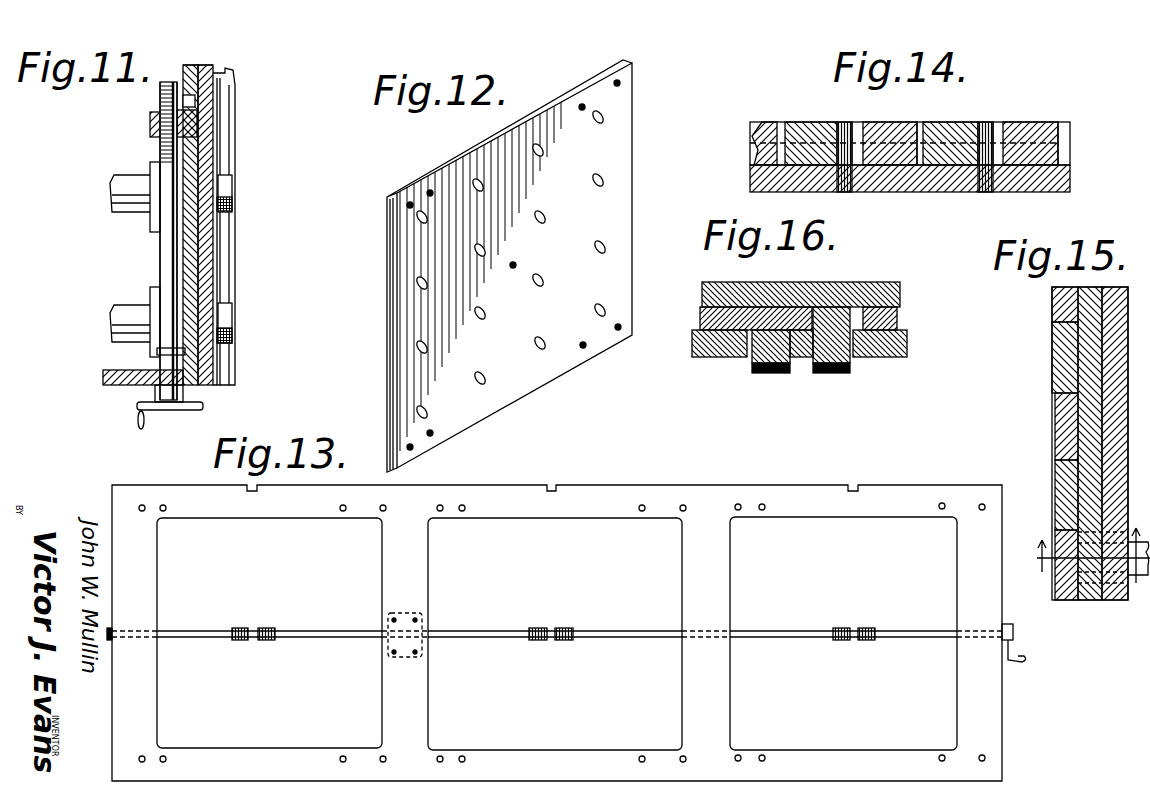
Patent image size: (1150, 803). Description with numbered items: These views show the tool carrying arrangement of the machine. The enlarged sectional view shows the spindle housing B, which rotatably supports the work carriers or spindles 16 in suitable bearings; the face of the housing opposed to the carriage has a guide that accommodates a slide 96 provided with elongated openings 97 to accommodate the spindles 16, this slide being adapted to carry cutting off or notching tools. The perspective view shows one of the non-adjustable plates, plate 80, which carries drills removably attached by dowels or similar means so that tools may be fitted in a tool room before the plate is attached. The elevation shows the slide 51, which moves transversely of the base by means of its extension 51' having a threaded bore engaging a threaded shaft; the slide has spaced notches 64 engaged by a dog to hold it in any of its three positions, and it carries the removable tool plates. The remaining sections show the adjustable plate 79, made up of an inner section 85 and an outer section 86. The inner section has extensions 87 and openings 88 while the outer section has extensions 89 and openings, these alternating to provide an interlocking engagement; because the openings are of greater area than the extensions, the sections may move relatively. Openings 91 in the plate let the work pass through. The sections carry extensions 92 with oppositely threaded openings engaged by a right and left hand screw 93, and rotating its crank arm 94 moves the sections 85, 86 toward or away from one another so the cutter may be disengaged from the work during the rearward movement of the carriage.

In FIG. 11, the work carriers or spindles 16 is at (130, 175).
In FIG. 15, the work carriers or spindles 16 is at (1086, 571).
In FIG. 13, the slide 51 is at (557, 604).
In FIG. 13, the extension 51' is at (435, 622).
In FIG. 13, the spaced notches 64 is at (245, 485).
In FIG. 14, the plate 79 is at (1081, 161).
In FIG. 16, the plate 79 is at (912, 335).
In FIG. 15, the plate 79 is at (1046, 357).
In FIG. 12, the plate 80 is at (445, 173).
In FIG. 14, the inner section 85 is at (1030, 125).
In FIG. 15, the inner section 85 is at (1062, 503).
In FIG. 14, the outer section 86 is at (755, 125).
In FIG. 15, the outer section 86 is at (1058, 425).
In FIG. 14, the extensions 87 is at (900, 130).
In FIG. 15, the extensions 87 is at (1056, 383).
In FIG. 15, the openings 88 is at (1060, 468).
In FIG. 14, the extensions 89 is at (770, 160).
In FIG. 14, the openings 91 is at (848, 124).
In FIG. 16, the extensions 92 is at (770, 374).
In FIG. 15, the extensions 92 is at (1110, 600).
In FIG. 13, the right and left hand screw 93 is at (563, 628).
In FIG. 13, the crank arm 94 is at (1024, 660).
In FIG. 11, the slide 96 is at (212, 125).
In FIG. 11, the elongated openings 97 is at (222, 270).
In FIG. 11, the spindle housing B is at (110, 384).